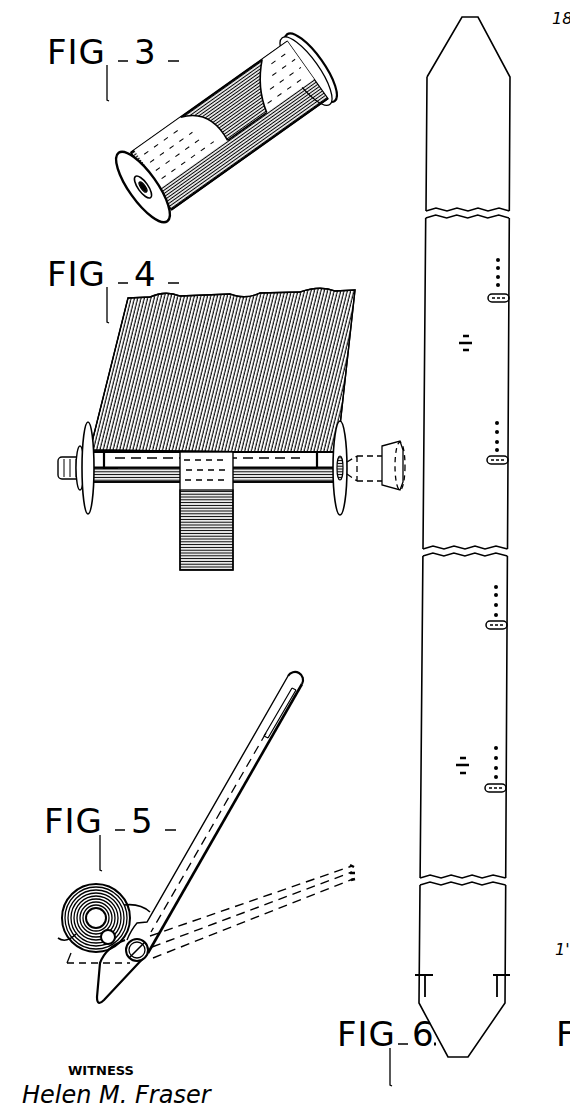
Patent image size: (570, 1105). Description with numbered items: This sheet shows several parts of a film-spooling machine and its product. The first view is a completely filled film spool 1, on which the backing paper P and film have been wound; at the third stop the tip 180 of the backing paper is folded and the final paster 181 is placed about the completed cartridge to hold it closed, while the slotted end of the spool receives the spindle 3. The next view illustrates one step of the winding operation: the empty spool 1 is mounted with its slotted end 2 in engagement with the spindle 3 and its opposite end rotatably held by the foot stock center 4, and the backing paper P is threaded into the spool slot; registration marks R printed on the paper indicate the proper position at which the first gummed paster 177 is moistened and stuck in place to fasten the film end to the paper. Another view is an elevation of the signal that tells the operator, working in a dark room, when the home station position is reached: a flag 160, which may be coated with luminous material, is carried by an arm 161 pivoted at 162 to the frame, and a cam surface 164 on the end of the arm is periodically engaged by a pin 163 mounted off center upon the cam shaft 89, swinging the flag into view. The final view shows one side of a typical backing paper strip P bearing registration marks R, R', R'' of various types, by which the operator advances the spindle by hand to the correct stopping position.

In FIG. 3, the spool 1 is at (322, 75).
In FIG. 4, the spool 1 is at (262, 486).
In FIG. 3, the spindle 3 is at (138, 188).
In FIG. 3, the tip 180 is at (284, 130).
In FIG. 3, the final paster 181 is at (264, 150).
In FIG. 3, the backing paper P is at (222, 181).
In FIG. 4, the backing paper P is at (158, 362).
In FIG. 6, the backing paper P is at (498, 497).
In FIG. 4, the slotted end 2 is at (78, 455).
In FIG. 4, the registration marks R is at (211, 483).
In FIG. 6, the registration marks R is at (464, 985).
In FIG. 4, the gummed paster 177 is at (196, 516).
In FIG. 4, the foot stock center 4 is at (362, 456).
In FIG. 5, the flag 160 is at (289, 690).
In FIG. 5, the arm 161 is at (247, 777).
In FIG. 5, the cam shaft 89 is at (100, 914).
In FIG. 5, the pin 163 is at (128, 912).
In FIG. 5, the pivot 162 is at (149, 960).
In FIG. 5, the cam surface 164 is at (98, 997).
In FIG. 6, the registration mark R' is at (497, 760).
In FIG. 6, the registration mark R'' is at (499, 342).